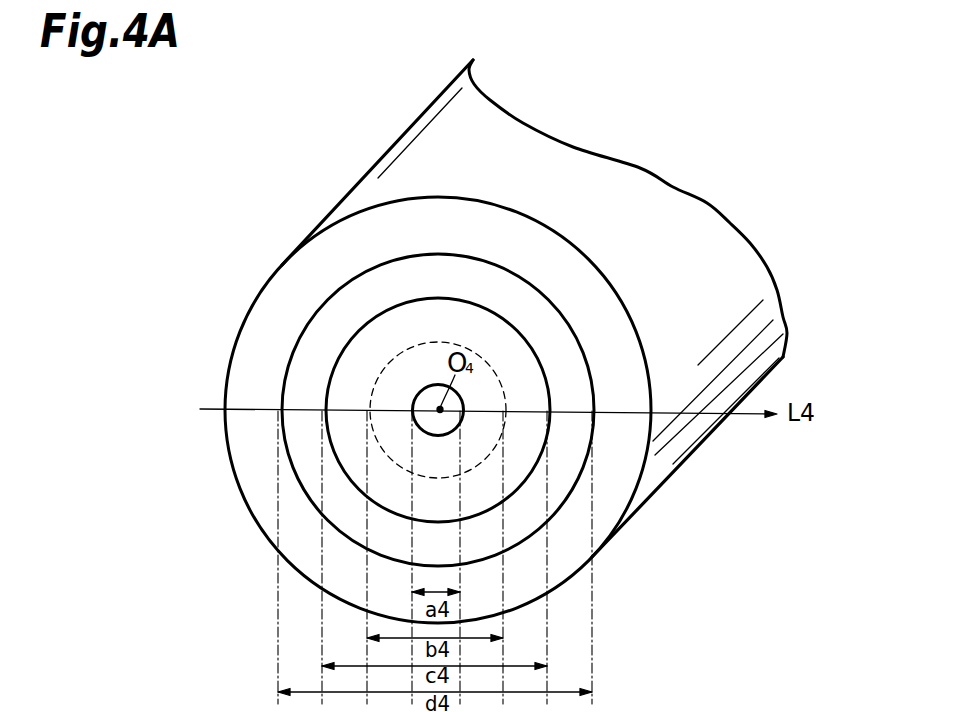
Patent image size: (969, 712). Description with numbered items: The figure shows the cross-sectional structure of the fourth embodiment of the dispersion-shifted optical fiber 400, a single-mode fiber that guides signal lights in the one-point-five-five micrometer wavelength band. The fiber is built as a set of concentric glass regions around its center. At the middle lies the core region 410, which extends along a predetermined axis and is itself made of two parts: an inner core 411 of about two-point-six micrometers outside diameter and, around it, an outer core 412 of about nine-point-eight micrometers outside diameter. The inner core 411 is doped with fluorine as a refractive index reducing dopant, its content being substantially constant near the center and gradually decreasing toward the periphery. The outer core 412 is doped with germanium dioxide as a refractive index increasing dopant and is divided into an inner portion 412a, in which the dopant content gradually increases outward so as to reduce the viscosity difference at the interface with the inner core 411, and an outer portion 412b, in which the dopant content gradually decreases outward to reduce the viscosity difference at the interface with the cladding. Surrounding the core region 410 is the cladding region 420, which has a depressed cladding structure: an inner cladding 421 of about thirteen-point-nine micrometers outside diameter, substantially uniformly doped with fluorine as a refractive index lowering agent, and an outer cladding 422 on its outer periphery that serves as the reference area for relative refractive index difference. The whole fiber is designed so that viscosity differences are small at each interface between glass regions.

The dispersion-shifted optical fiber 400 is at (667, 219).
The core region 410 is at (275, 368).
The inner core 411 is at (395, 384).
The outer core 412 is at (313, 387).
The inner portion of the outer core 412a is at (382, 384).
The outer portion of the outer core 412b is at (358, 392).
The cladding region 420 is at (532, 423).
The inner cladding 421 is at (600, 509).
The outer cladding 422 is at (555, 490).